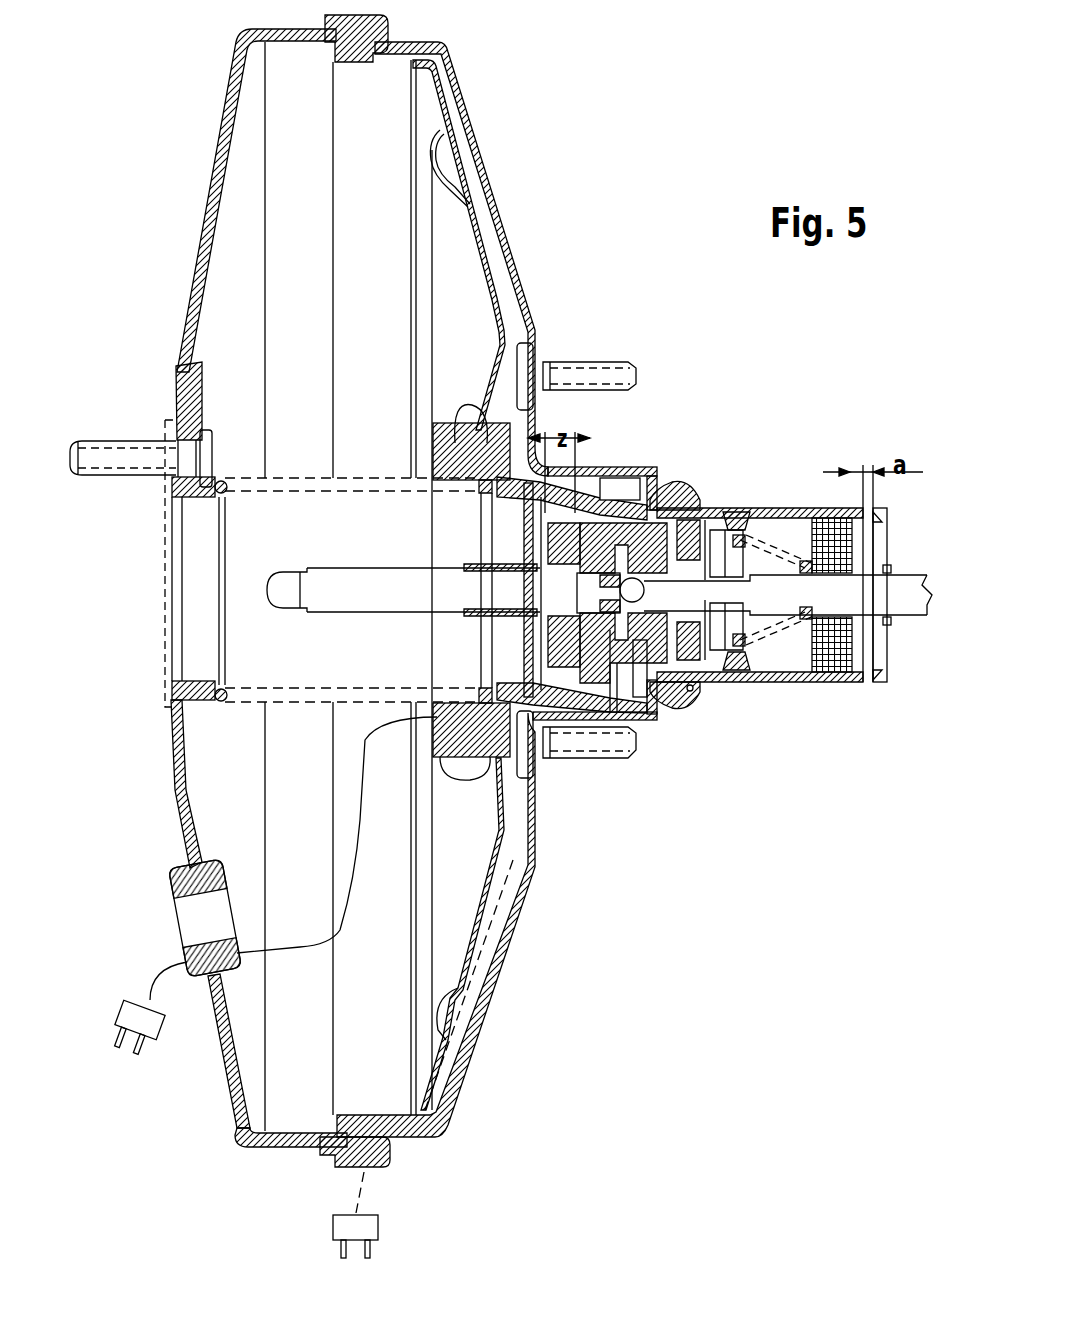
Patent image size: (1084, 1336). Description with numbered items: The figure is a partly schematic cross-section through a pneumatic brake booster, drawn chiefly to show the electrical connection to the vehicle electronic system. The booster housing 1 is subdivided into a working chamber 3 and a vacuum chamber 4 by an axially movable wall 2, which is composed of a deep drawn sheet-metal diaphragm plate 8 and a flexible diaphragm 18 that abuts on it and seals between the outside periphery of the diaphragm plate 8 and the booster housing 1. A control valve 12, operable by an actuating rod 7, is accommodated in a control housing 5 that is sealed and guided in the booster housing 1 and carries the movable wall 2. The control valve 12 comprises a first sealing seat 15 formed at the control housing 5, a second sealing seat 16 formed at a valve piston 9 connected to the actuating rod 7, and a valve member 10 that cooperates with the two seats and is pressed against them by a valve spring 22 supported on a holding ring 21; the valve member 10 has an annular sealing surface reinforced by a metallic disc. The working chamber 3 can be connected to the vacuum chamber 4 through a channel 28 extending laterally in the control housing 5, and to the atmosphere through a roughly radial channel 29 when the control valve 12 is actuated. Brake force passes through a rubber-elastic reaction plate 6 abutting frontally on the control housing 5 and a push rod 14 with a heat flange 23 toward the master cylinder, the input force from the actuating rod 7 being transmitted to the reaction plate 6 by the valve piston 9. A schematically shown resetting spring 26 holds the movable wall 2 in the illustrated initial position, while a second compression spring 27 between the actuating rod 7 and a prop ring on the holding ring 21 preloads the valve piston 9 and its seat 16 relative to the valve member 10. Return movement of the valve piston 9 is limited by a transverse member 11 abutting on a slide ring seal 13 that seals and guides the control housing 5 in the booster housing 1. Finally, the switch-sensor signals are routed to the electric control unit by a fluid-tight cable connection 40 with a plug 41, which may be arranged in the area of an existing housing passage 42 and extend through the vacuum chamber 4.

The booster housing 1 is at (481, 88).
The axially movable wall 2 is at (472, 201).
The working chamber 3 is at (493, 240).
The vacuum chamber 4 is at (283, 178).
The control housing 5 is at (802, 512).
The reaction plate 6 is at (548, 655).
The actuating rod 7 is at (906, 600).
The diaphragm plate 8 is at (497, 276).
The valve piston 9 is at (600, 575).
The valve member 10 is at (700, 662).
The transverse member 11 is at (668, 530).
The control valve 12 is at (737, 505).
The slide ring seal 13 is at (665, 692).
The push rod 14 is at (357, 586).
The first sealing seat 15 is at (695, 495).
The second sealing seat 16 is at (712, 500).
The flexible diaphragm 18 is at (507, 311).
The holding ring 21 is at (797, 682).
The valve spring 22 is at (742, 672).
The heat flange 23 is at (470, 690).
The resetting spring 26 is at (320, 700).
The second compression spring 27 is at (782, 633).
The channel 28 is at (622, 520).
The channel 29 is at (623, 670).
The cable connection 40 is at (312, 953).
The plug 41 is at (160, 1020).
The housing passage 42 is at (178, 872).